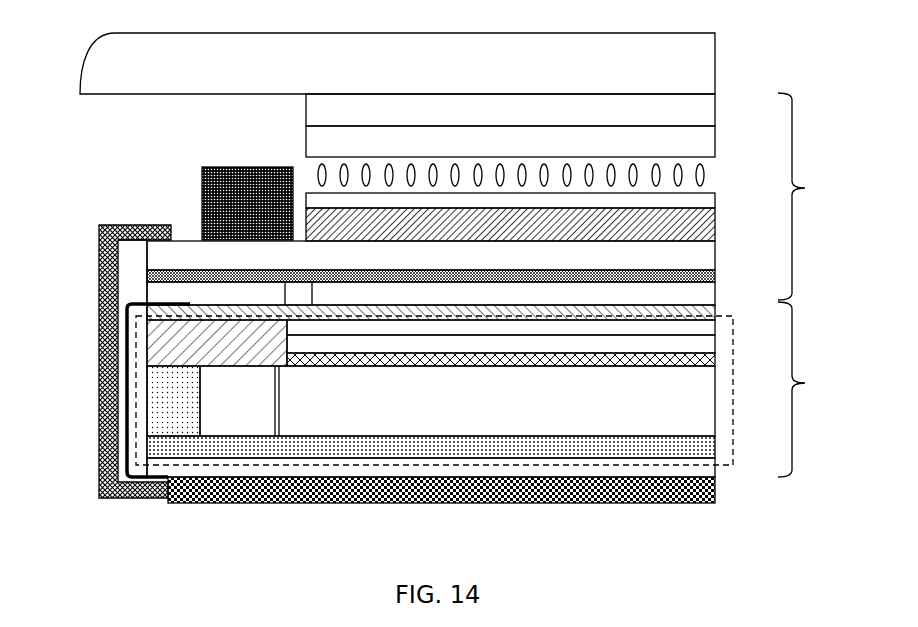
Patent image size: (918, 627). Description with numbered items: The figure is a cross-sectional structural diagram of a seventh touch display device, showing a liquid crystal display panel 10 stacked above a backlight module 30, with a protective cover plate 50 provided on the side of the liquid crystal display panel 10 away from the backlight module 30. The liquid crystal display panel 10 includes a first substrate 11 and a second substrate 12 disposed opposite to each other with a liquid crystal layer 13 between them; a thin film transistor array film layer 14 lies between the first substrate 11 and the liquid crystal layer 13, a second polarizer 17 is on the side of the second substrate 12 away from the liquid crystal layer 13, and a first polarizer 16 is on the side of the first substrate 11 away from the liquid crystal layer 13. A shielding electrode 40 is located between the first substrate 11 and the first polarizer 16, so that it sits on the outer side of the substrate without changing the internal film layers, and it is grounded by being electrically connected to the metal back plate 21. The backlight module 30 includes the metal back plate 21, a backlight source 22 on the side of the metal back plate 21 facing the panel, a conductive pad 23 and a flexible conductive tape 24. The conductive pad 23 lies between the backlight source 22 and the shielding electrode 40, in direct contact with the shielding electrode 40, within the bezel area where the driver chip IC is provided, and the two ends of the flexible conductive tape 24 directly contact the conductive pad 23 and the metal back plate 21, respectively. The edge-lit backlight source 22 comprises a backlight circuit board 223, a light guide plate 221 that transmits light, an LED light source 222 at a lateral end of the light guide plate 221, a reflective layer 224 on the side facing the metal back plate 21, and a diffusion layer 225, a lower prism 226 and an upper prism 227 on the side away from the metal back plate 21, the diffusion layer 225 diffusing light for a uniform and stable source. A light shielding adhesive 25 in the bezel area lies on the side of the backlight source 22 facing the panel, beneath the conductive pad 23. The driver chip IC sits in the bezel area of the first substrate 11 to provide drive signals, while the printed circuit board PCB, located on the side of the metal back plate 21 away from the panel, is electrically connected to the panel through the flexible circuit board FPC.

The protective cover plate 50 is at (695, 65).
The second polarizer 17 is at (685, 112).
The second substrate 12 is at (698, 142).
The liquid crystal layer 13 is at (705, 175).
The backlight module 30 is at (703, 201).
The liquid crystal display panel 10 is at (806, 196).
The thin film transistor array film layer 14 is at (700, 228).
The first substrate 11 is at (698, 255).
The shielding electrode 40 is at (717, 277).
The first polarizer 16 is at (698, 293).
The light shielding adhesive 25 is at (717, 312).
The upper prism 227 is at (698, 330).
The lower prism 226 is at (700, 347).
The diffusion layer 225 is at (718, 363).
The backlight circuit board 223 is at (178, 343).
The LED light source 222 is at (205, 387).
The light guide plate 221 is at (703, 403).
The reflective layer 224 is at (698, 447).
The backlight source 22 is at (450, 465).
The metal back plate 21 is at (693, 468).
The conductive pad 23 is at (160, 292).
The flexible conductive tape 24 is at (127, 435).
The driver chip IC is at (245, 172).
The flexible circuit board FPC is at (108, 224).
The printed circuit board PCB is at (250, 505).